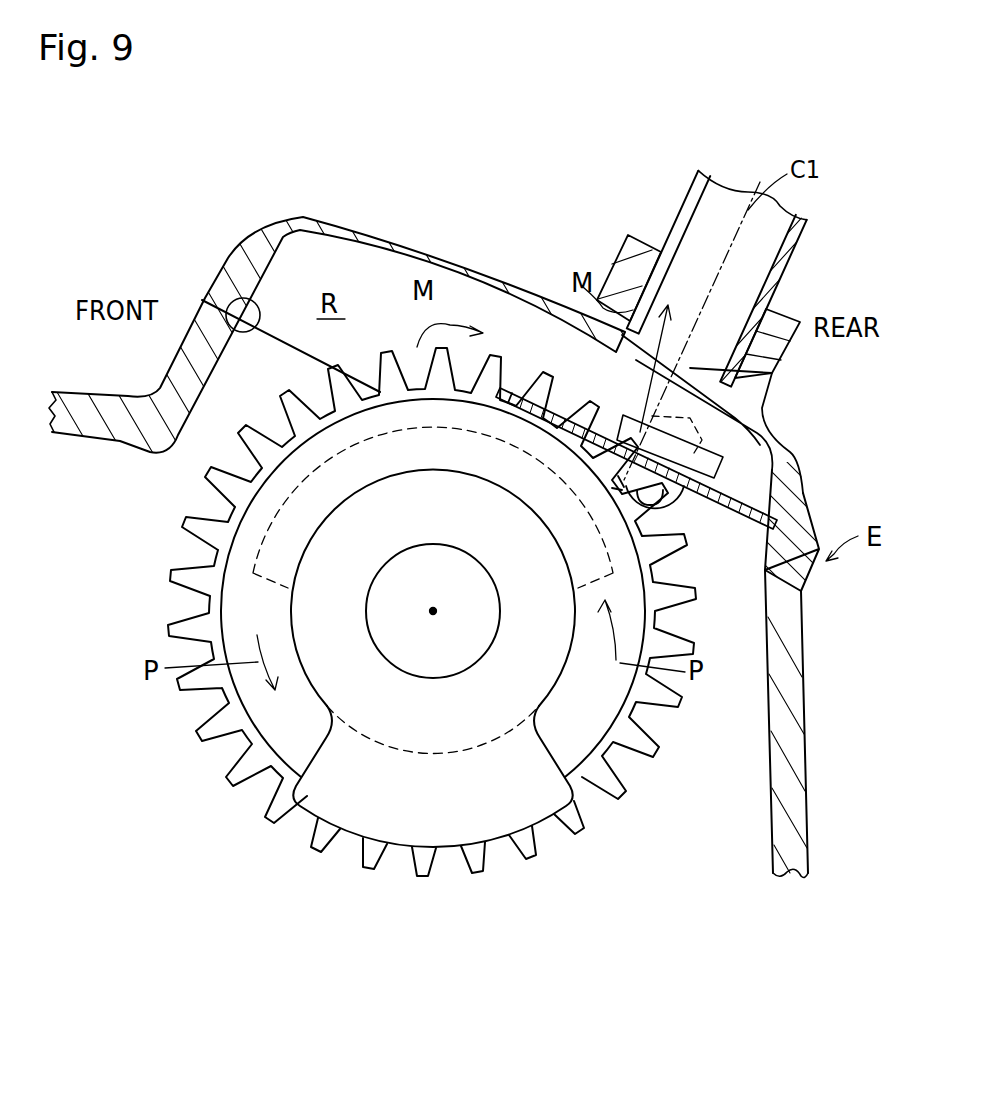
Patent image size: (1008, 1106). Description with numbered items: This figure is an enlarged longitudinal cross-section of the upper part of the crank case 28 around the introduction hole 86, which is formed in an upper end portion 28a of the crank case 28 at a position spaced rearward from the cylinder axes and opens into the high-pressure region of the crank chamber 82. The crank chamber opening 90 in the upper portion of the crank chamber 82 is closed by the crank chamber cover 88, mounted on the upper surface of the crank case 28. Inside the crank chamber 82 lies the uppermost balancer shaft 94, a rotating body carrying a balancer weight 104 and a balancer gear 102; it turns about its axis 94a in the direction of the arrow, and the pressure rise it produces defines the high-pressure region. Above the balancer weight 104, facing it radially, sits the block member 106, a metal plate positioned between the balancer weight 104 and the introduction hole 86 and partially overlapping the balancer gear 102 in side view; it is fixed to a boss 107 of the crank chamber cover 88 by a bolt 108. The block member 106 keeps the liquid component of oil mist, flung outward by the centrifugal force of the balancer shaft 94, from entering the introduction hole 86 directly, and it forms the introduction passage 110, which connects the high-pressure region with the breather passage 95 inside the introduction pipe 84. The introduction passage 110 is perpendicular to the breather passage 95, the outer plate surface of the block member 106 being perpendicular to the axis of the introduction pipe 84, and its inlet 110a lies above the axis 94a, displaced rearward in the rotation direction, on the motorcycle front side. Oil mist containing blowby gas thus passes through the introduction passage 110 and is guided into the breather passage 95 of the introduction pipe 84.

The crank chamber 82 is at (393, 612).
The introduction pipe 84 is at (799, 320).
The breather passage 95 is at (793, 246).
The introduction hole 86 is at (765, 345).
The crank chamber cover 88 is at (351, 233).
The crank chamber opening 90 is at (248, 312).
The balancer shaft 94 is at (383, 626).
The axis of the balancer shaft 94a is at (433, 611).
The balancer gear 102 is at (238, 773).
The balancer weight 104 is at (310, 800).
The block member 106 is at (768, 503).
The boss 107 is at (720, 438).
The bolt 108 is at (672, 507).
The introduction passage 110 is at (597, 369).
The inlet of the introduction passage 110a is at (520, 338).
The wall 28a is at (820, 723).
The crank case 28 is at (795, 667).